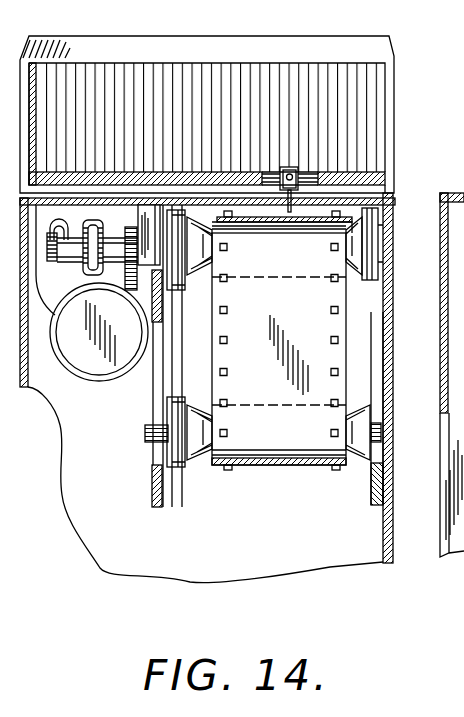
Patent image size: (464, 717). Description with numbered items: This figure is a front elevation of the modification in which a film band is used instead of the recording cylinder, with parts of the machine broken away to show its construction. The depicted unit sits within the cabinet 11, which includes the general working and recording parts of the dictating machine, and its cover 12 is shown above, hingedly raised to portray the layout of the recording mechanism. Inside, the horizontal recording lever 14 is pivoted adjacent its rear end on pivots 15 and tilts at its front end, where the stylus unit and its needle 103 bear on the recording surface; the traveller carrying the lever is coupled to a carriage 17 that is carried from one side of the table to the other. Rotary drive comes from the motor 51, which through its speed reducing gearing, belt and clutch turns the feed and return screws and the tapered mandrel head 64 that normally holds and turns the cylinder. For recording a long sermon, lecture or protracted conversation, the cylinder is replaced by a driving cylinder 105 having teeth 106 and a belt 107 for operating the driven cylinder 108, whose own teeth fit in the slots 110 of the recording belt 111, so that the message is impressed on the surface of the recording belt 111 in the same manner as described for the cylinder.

The cabinet 11 is at (440, 328).
The cover 12 is at (385, 47).
The recording lever 14 is at (299, 166).
The pivots 15 is at (200, 551).
The carriage 17 is at (316, 181).
The motor 51 is at (99, 332).
The tapered mandrel head 64 is at (200, 280).
The needle 103 is at (292, 222).
The driving cylinder 105 is at (393, 209).
The teeth 106 is at (340, 216).
The belt 107 is at (181, 339).
The driven cylinder 108 is at (197, 468).
The slots 110 is at (228, 373).
The recording belt 111 is at (279, 349).